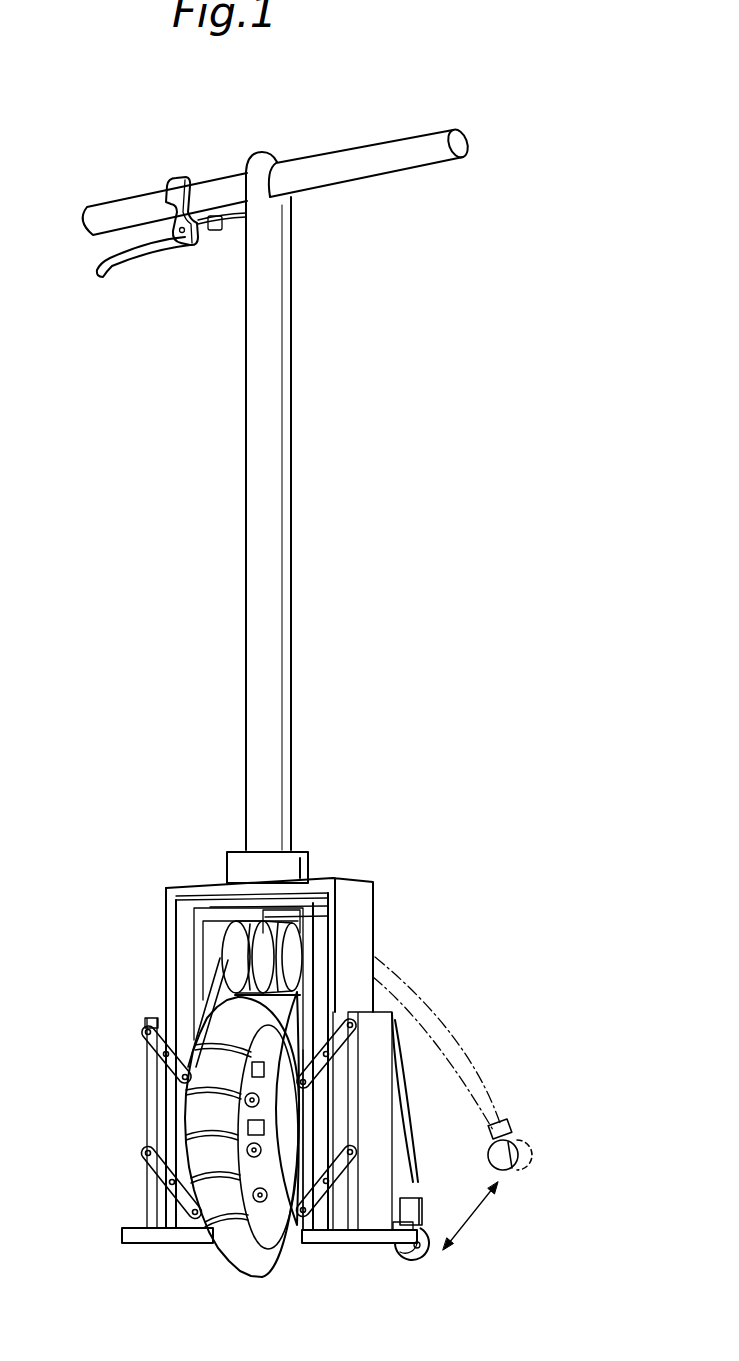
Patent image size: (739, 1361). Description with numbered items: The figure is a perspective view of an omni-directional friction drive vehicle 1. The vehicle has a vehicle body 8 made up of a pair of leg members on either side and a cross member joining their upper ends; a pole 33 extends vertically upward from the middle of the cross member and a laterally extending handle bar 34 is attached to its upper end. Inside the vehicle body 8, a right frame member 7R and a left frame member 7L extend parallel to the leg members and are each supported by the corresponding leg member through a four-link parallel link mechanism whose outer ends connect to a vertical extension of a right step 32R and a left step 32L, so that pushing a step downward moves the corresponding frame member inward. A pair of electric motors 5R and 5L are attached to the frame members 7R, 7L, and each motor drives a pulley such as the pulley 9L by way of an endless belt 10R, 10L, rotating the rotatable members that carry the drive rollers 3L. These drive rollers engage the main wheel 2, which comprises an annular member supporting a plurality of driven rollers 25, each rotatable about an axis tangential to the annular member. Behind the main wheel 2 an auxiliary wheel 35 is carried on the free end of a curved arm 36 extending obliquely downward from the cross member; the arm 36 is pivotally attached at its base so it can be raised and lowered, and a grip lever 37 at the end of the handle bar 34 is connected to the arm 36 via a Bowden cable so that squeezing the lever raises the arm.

The omni-directional vehicle 1 is at (463, 790).
The main wheel 2 is at (230, 1238).
The drive roller 3L is at (262, 1185).
The electric motor 5R is at (240, 955).
The electric motor 5L is at (267, 963).
The right frame member 7R is at (192, 972).
The left frame member 7L is at (317, 938).
The vehicle body 8 is at (345, 860).
The pulley 9L is at (317, 1228).
The endless belt 10R is at (203, 1020).
The endless belt 10L is at (287, 1028).
The driven rollers 25 is at (212, 1210).
The right step 32R is at (138, 1237).
The left step 32L is at (373, 1237).
The pole 33 is at (273, 560).
The handle bar 34 is at (369, 167).
The auxiliary wheel 35 is at (423, 1253).
The curved arm 36 is at (398, 1115).
The grip lever 37 is at (130, 250).